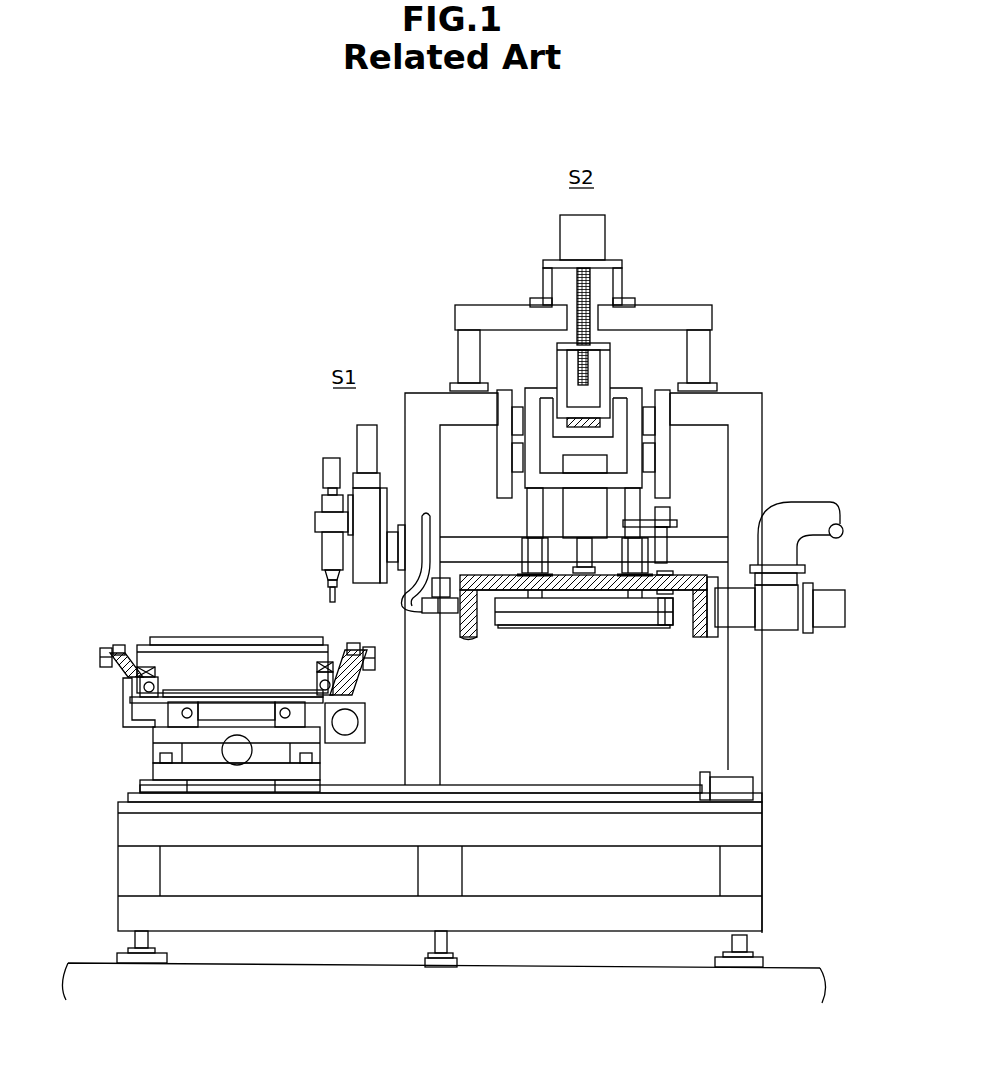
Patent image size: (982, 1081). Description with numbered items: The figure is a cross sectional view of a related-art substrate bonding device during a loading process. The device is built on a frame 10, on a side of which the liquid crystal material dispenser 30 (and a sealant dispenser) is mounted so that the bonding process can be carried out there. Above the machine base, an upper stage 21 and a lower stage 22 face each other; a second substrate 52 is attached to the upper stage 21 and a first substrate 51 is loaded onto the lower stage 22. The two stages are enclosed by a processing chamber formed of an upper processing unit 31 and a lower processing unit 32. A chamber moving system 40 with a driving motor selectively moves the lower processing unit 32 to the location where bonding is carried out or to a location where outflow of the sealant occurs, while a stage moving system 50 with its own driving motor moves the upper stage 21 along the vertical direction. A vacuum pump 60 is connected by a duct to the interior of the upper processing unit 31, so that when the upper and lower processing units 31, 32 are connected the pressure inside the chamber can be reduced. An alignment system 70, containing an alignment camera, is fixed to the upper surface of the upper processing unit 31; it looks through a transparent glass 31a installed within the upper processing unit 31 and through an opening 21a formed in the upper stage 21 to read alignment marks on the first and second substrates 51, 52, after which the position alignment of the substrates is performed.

The frame 10 is at (752, 712).
The upper stage 21 is at (588, 608).
The opening 21a is at (668, 612).
The lower stage 22 is at (182, 663).
The liquid crystal material dispenser 30 is at (308, 537).
The upper processing unit 31 is at (487, 575).
The transparent glass 31a is at (668, 572).
The lower processing unit 32 is at (115, 678).
The chamber moving system 40 is at (746, 787).
The stage moving system 50 is at (618, 252).
The first substrate 51 is at (226, 638).
The second substrate 52 is at (648, 630).
The vacuum pump 60 is at (428, 608).
The alignment system 70 is at (663, 548).